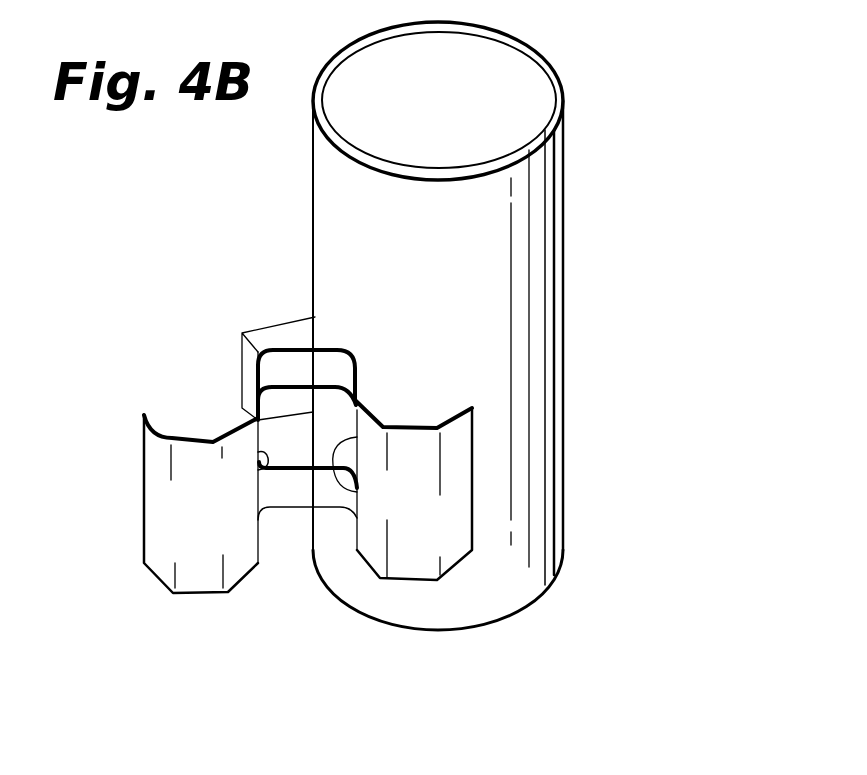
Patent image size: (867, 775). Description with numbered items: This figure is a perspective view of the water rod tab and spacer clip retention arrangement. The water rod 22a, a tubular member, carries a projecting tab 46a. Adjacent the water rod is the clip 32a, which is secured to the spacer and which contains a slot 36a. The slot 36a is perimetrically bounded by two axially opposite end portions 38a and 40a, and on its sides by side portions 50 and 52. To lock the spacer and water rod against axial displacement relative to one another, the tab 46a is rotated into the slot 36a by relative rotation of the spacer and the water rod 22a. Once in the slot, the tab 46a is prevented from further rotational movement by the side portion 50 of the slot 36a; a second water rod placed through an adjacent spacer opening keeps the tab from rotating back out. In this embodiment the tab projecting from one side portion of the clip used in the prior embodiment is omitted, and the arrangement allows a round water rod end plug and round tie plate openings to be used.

The water rod 22a is at (528, 252).
The clip 32a is at (193, 572).
The slot 36a is at (278, 435).
The end portion 38a is at (297, 367).
The end portion 40a is at (270, 493).
The tab 46a is at (244, 333).
The side portion 50 is at (359, 490).
The side portion 52 is at (256, 470).